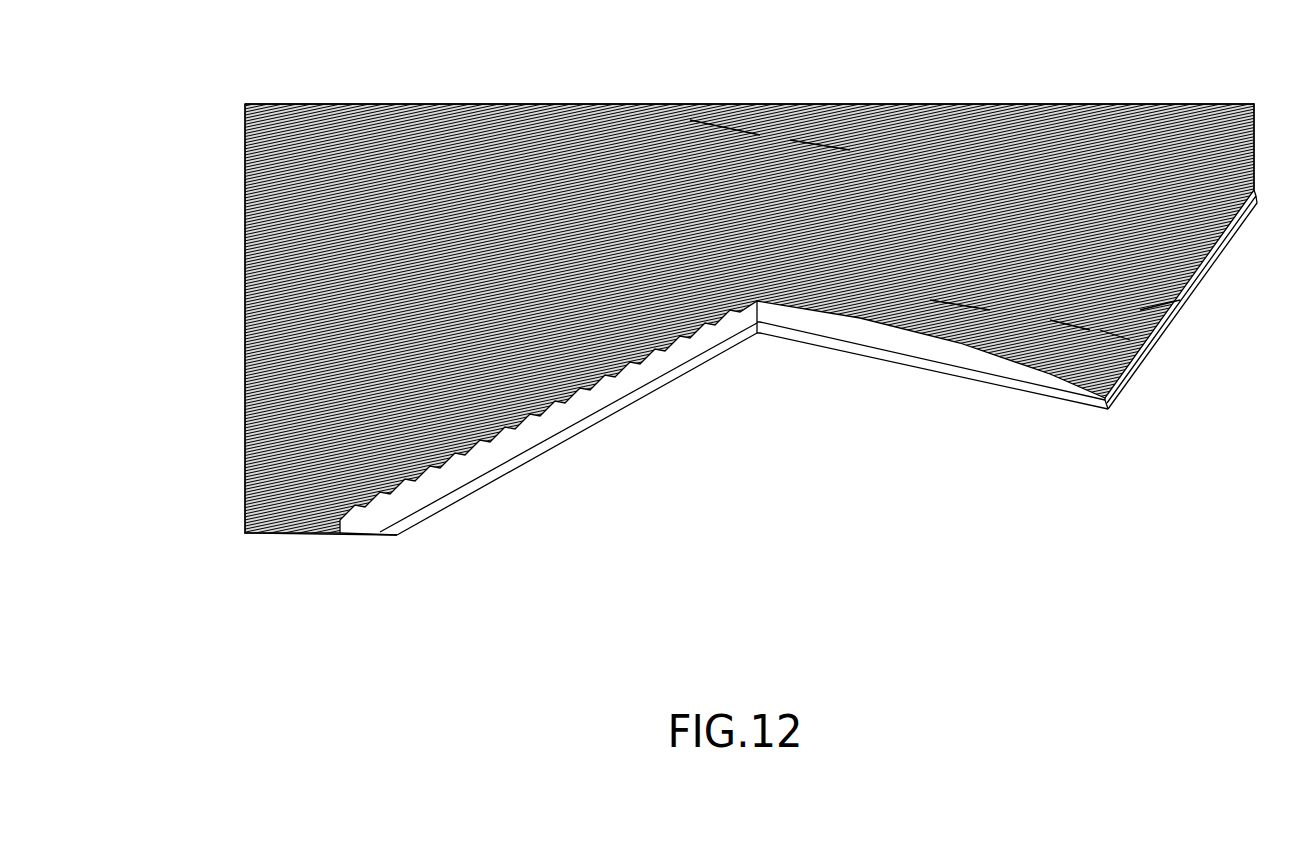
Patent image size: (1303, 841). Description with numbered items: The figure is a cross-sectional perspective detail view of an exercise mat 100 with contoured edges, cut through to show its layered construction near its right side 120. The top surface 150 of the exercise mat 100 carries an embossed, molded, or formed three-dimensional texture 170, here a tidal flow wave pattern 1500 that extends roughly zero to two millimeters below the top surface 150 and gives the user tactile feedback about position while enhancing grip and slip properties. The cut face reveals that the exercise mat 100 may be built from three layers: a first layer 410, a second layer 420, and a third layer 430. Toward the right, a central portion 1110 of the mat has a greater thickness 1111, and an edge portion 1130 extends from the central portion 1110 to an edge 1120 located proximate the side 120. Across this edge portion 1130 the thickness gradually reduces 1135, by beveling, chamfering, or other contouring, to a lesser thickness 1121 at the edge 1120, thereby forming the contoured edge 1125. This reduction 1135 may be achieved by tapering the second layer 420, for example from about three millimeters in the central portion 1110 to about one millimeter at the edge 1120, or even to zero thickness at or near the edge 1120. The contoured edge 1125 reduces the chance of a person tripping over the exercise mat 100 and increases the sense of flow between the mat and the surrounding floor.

The exercise mat 100 is at (357, 617).
The top surface 150 is at (322, 498).
The three-dimensional texture 170 is at (726, 128).
The tidal flow wave pattern 1500 is at (815, 137).
The central portion 1110 is at (945, 318).
The greater thickness 1111 is at (810, 322).
The edge portion 1130 is at (1068, 340).
The contoured edge 1125 is at (1105, 340).
The edge 1120 is at (1145, 328).
The lesser thickness 1121 is at (1100, 403).
The contoured reduction in thickness 1135 is at (1040, 375).
The right side 120 is at (1150, 348).
The first layer 410 is at (418, 495).
The second layer 420 is at (537, 435).
The third layer 430 is at (627, 402).